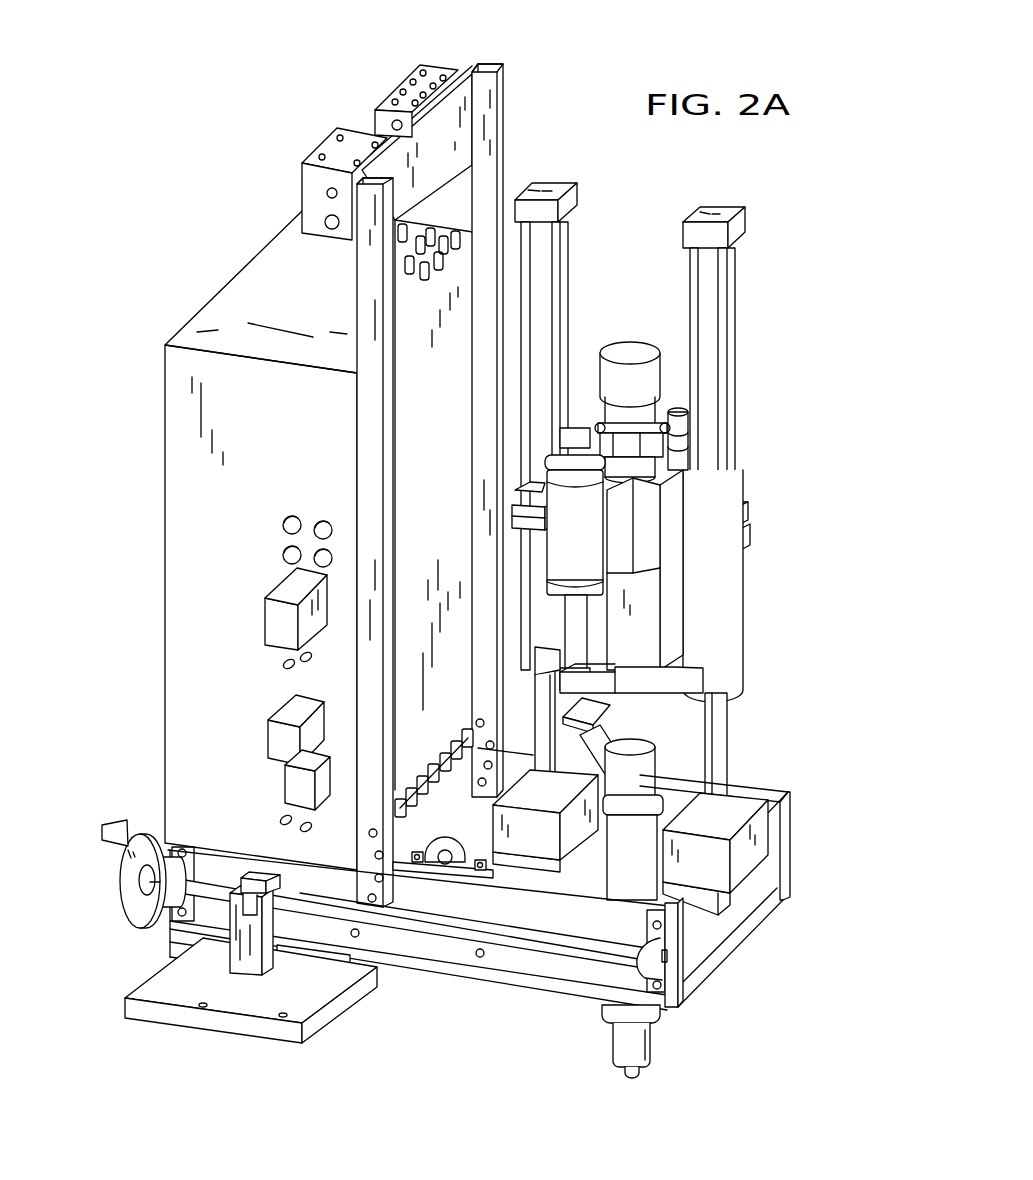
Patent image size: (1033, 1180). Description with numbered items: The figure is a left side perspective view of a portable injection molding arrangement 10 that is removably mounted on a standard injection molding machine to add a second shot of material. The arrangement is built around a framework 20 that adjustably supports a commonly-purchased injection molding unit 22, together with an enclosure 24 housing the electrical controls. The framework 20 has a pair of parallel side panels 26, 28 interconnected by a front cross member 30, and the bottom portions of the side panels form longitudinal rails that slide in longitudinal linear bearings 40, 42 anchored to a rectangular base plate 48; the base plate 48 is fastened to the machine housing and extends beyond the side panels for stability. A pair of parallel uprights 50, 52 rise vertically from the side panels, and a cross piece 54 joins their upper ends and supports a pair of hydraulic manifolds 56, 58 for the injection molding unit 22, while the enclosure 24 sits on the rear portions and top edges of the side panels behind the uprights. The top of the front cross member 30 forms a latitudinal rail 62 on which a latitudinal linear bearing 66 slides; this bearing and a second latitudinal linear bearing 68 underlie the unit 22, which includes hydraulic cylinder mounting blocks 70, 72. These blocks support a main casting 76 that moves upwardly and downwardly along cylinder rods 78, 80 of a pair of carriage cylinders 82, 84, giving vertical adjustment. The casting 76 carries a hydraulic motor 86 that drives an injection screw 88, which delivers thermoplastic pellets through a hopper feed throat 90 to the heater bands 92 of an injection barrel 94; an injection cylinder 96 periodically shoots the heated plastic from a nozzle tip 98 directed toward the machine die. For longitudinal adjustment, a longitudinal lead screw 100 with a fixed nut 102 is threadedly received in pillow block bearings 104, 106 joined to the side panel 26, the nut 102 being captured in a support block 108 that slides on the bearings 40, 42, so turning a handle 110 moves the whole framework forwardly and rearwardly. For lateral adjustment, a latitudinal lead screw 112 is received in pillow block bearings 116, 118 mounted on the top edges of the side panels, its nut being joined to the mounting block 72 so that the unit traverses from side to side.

The portable injection molding arrangement 10 is at (531, 107).
The framework 20 is at (753, 922).
The injection molding unit 22 is at (756, 508).
The enclosure 24 is at (238, 290).
The side panel 26 is at (532, 965).
The side panel 28 is at (786, 795).
The front cross member 30 is at (728, 926).
The longitudinal linear bearing 40 is at (170, 948).
The longitudinal linear bearing 42 is at (323, 953).
The base plate 48 is at (162, 1018).
The upright 50 is at (395, 487).
The upright 52 is at (492, 82).
The cross piece 54 is at (442, 155).
The hydraulic manifold 56 is at (357, 137).
The hydraulic manifold 58 is at (413, 100).
The latitudinal rail 62 is at (695, 917).
The latitudinal linear bearing 66 is at (757, 863).
The latitudinal linear bearing 68 is at (560, 860).
The hydraulic cylinder mounting block 70 is at (752, 830).
The hydraulic cylinder mounting block 72 is at (538, 842).
The main casting 76 is at (662, 678).
The cylinder rod 78 is at (540, 710).
The cylinder rod 80 is at (716, 758).
The carriage cylinder 82 is at (552, 266).
The carriage cylinder 84 is at (722, 300).
The hydraulic motor 86 is at (643, 350).
The injection screw 88 is at (647, 596).
The hopper feed throat 90 is at (648, 760).
The heater bands 92 is at (603, 1010).
The injection barrel 94 is at (637, 1042).
The injection cylinder 96 is at (570, 555).
The nozzle tip 98 is at (638, 1076).
The longitudinal lead screw 100 is at (425, 917).
The nut 102 is at (253, 879).
The pillow block bearing 104 is at (148, 915).
The pillow block bearing 106 is at (668, 955).
The support block 108 is at (253, 945).
The handle 110 is at (127, 826).
The latitudinal lead screw 112 is at (452, 773).
The pillow block bearing 116 is at (435, 840).
The pillow block bearing 118 is at (596, 720).